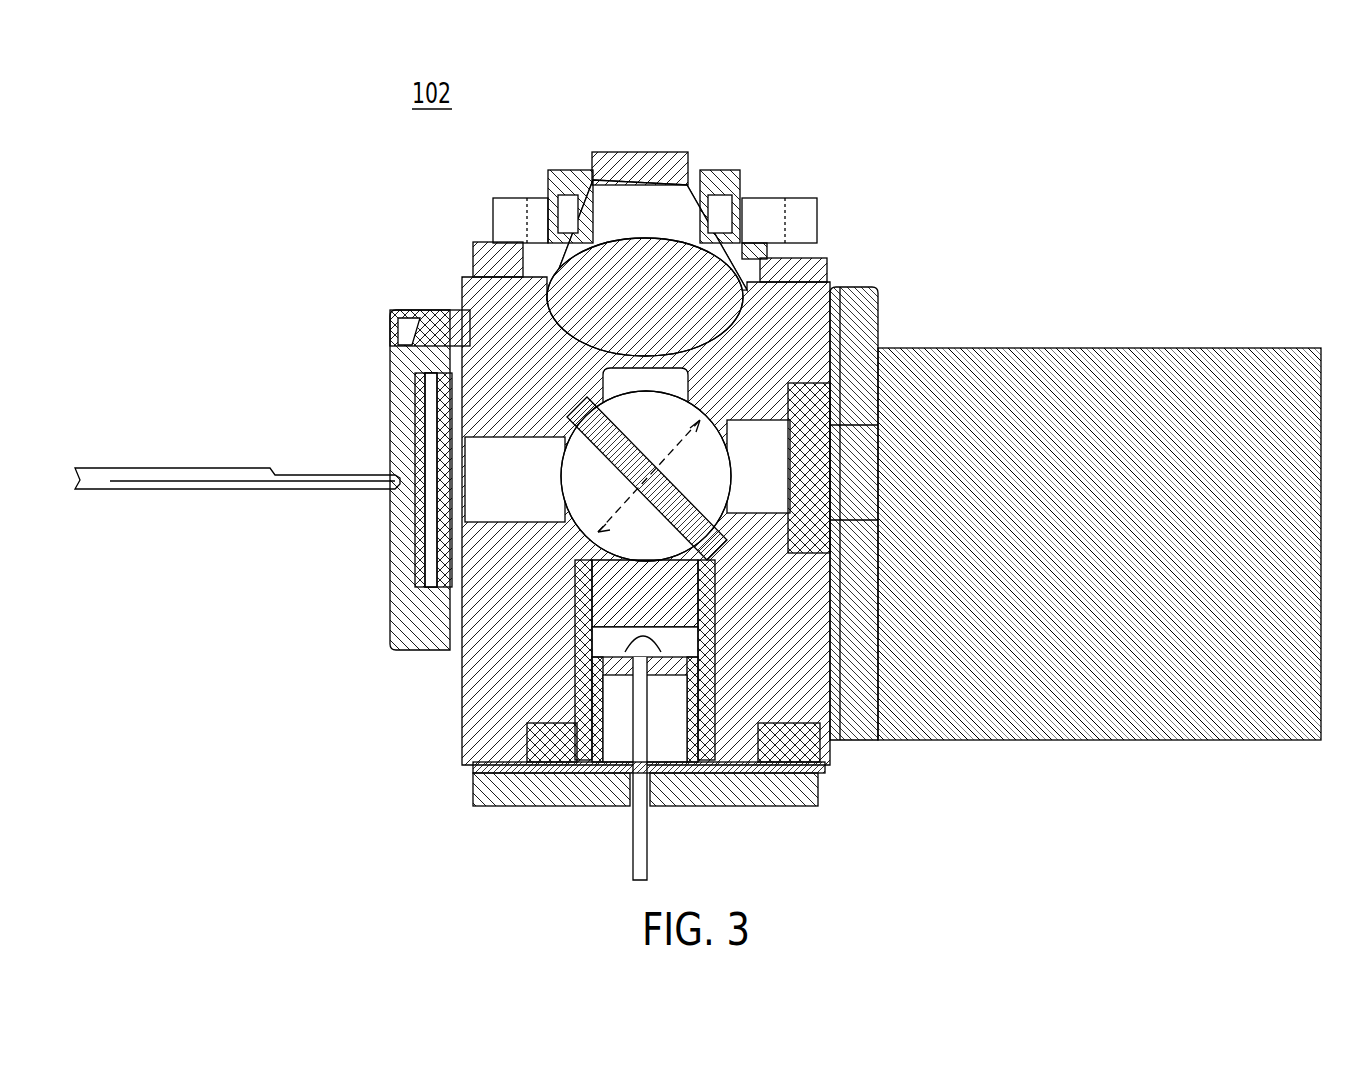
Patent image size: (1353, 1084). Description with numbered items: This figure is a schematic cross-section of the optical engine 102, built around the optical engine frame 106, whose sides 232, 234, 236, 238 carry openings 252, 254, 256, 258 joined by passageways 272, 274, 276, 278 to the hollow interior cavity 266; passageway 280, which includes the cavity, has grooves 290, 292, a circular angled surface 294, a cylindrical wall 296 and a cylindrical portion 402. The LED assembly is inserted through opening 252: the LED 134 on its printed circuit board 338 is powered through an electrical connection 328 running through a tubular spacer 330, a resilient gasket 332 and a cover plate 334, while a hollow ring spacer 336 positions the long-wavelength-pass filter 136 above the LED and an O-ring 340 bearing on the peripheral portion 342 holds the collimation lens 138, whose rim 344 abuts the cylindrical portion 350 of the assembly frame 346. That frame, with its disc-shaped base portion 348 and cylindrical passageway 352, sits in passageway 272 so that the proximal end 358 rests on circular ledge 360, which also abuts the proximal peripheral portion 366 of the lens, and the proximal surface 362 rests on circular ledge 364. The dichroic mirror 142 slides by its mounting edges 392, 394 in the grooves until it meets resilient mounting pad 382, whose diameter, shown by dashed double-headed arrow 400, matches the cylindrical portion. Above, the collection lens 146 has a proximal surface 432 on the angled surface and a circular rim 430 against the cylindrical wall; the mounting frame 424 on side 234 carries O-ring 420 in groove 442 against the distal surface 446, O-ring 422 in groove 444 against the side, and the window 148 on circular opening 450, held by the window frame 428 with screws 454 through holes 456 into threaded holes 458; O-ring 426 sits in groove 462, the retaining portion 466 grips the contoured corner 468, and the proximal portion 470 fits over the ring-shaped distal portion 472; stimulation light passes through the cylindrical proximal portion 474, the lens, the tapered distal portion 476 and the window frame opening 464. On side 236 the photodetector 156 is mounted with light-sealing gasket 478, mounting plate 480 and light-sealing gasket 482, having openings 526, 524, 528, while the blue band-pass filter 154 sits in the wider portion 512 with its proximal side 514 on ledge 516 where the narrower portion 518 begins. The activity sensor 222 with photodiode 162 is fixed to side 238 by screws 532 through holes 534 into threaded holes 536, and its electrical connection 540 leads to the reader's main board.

The optical engine 102 is at (646, 472).
The optical engine frame 106 is at (480, 262).
The LED 134 is at (700, 665).
The long-wavelength-pass filter 136 is at (600, 640).
The collimation lens 138 is at (700, 645).
The dichroic mirror 142 is at (625, 475).
The collection lens 146 is at (728, 322).
The window 148 is at (628, 170).
The blue band-pass filter 154 is at (820, 432).
The photodetector 156 is at (1155, 360).
The photodiode 162 is at (445, 500).
The activity sensor 222 is at (400, 630).
The side 232 is at (815, 770).
The side 234 is at (478, 250).
The side 236 is at (832, 687).
The side 238 is at (448, 598).
The opening 252 is at (780, 780).
The opening 254 is at (700, 238).
The opening 256 is at (835, 385).
The opening 258 is at (445, 405).
The hollow interior cavity 266 is at (570, 470).
The passageway 272 is at (580, 715).
The passageway 274 is at (700, 380).
The passageway 276 is at (845, 532).
The passageway 278 is at (455, 478).
The passageway 280 is at (735, 575).
The groove 290 is at (590, 410).
The groove 292 is at (735, 515).
The circular angled surface 294 is at (575, 320).
The cylindrical wall 296 is at (565, 292).
The electrical connection 328 is at (632, 860).
The tubular spacer 330 is at (695, 775).
The gasket 332 is at (470, 770).
The cover plate 334 is at (500, 810).
The hollow ring spacer 336 is at (600, 655).
The printed circuit board 338 is at (590, 690).
The O-ring 340 is at (600, 600).
The peripheral portion 342 is at (700, 600).
The rim 344 is at (715, 620).
The assembly frame 346 is at (690, 710).
The base portion 348 is at (742, 770).
The cylindrical portion 350 is at (600, 750).
The cylindrical passageway 352 is at (600, 775).
The proximal end 358 is at (580, 600).
The circular ledge 360 is at (625, 558).
The proximal surface 362 is at (835, 700).
The circular ledge 364 is at (550, 760).
The proximal peripheral portion 366 is at (590, 585).
The resilient mounting pad 382 is at (565, 455).
The mounting edge 392 is at (580, 410).
The mounting edge 394 is at (740, 610).
The dashed double-headed arrow 400 is at (660, 462).
The cylindrical portion 402 is at (700, 455).
The O-ring 420 is at (770, 265).
The O-ring 422 is at (770, 250).
The mounting frame 424 is at (785, 210).
The O-ring 426 is at (702, 225).
The window frame 428 is at (700, 205).
The circular rim 430 is at (830, 285).
The proximal surface 432 is at (570, 360).
The groove 442 is at (503, 213).
The groove 444 is at (790, 228).
The distal surface 446 is at (610, 228).
The circular opening 450 is at (655, 185).
The screws 454 is at (565, 185).
The holes 456 is at (555, 185).
The threaded holes 458 is at (745, 205).
The groove 462 is at (583, 190).
The opening 464 is at (596, 180).
The retaining portion 466 is at (700, 185).
The contoured corner 468 is at (692, 175).
The proximal portion 470 is at (745, 220).
The ring-shaped distal portion 472 is at (548, 195).
The cylindrical proximal portion 474 is at (575, 377).
The tapered distal portion 476 is at (552, 246).
The light-sealing gasket 478 is at (885, 742).
The mounting plate 480 is at (860, 745).
The light-sealing gasket 482 is at (835, 742).
The wider portion 512 is at (848, 590).
The proximal side 514 is at (775, 490).
The ledge 516 is at (865, 560).
The narrower portion 518 is at (860, 495).
The opening 524 is at (875, 437).
The opening 526 is at (880, 502).
The opening 528 is at (855, 445).
The screws 532 is at (410, 352).
The holes 534 is at (405, 335).
The threaded holes 536 is at (470, 312).
The electrical connection 540 is at (175, 488).